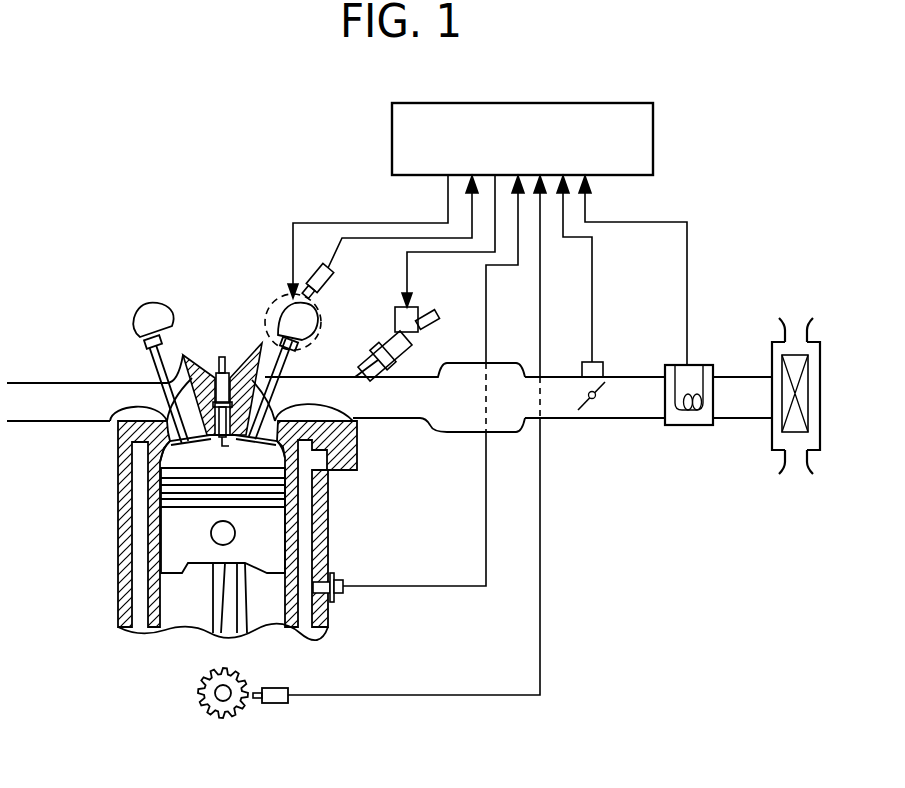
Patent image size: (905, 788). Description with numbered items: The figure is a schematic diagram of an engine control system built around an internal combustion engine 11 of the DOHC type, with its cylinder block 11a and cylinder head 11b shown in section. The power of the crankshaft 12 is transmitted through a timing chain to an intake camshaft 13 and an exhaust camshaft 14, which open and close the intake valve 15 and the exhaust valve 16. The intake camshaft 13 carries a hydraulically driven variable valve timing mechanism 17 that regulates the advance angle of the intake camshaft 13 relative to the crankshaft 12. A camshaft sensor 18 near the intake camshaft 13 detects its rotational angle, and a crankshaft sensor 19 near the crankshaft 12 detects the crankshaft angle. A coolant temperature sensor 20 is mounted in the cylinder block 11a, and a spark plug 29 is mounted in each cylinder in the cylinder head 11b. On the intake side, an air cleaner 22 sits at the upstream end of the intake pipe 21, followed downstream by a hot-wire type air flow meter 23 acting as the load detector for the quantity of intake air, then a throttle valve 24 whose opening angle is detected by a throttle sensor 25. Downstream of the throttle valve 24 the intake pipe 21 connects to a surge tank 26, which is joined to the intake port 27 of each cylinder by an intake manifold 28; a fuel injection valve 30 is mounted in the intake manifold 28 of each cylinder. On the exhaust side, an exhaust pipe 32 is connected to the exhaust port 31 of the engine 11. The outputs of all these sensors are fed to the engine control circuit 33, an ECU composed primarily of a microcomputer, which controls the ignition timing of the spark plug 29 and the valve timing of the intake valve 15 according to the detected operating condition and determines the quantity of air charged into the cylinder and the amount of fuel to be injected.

The internal combustion engine 11 is at (103, 559).
The cylinder block 11a is at (330, 553).
The cylinder head 11b is at (240, 368).
The crankshaft 12 is at (217, 695).
The intake camshaft 13 is at (287, 320).
The exhaust camshaft 14 is at (143, 320).
The intake valve 15 is at (288, 478).
The exhaust valve 16 is at (160, 472).
The variable valve timing mechanism 17 is at (278, 300).
The camshaft sensor 18 is at (333, 275).
The crankshaft sensor 19 is at (278, 688).
The coolant temperature sensor 20 is at (343, 588).
The intake pipe 21 is at (640, 418).
The air cleaner 22 is at (797, 433).
The air flow meter 23 is at (702, 363).
The throttle valve 24 is at (580, 410).
The throttle sensor 25 is at (600, 362).
The surge tank 26 is at (500, 432).
The intake port 27 is at (355, 422).
The intake manifold 28 is at (422, 420).
The spark plug 29 is at (183, 352).
The fuel injection valve 30 is at (378, 363).
The exhaust port 31 is at (110, 422).
The exhaust pipe 32 is at (55, 382).
The engine control circuit 33 is at (653, 138).